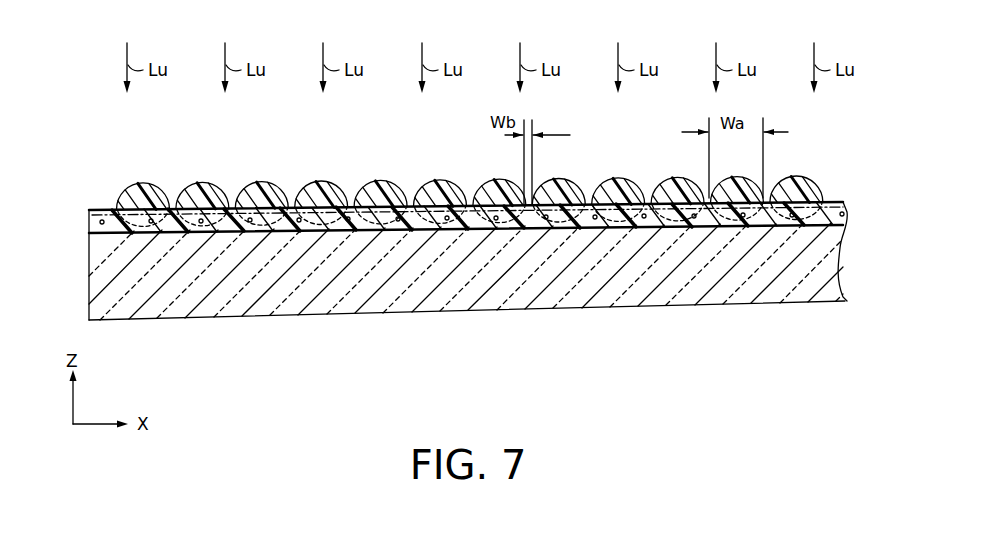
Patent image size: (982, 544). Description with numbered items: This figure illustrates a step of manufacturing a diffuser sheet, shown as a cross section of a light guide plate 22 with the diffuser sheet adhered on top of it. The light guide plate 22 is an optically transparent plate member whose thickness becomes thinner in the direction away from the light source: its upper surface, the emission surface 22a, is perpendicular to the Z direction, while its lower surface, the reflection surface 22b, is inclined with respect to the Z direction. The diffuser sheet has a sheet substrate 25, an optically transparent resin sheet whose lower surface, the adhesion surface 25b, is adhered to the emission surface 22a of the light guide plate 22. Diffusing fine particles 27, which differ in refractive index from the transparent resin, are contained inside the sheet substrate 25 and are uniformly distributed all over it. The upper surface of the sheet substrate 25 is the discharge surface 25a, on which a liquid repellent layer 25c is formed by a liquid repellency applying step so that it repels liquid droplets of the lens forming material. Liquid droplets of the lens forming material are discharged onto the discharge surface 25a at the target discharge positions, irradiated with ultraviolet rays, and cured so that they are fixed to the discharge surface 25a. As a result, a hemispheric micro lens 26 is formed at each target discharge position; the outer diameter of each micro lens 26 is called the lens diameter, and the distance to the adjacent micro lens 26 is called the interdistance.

The light guide plate 22 is at (464, 270).
The emission surface 22a is at (110, 219).
The reflection surface 22b is at (480, 312).
The sheet substrate 25 is at (473, 214).
The discharge surface 25a is at (827, 198).
The adhesion surface 25b is at (313, 236).
The liquid repellent layer 25c is at (163, 190).
The micro lens 26 is at (470, 178).
The diffusing fine particles 27 is at (190, 235).